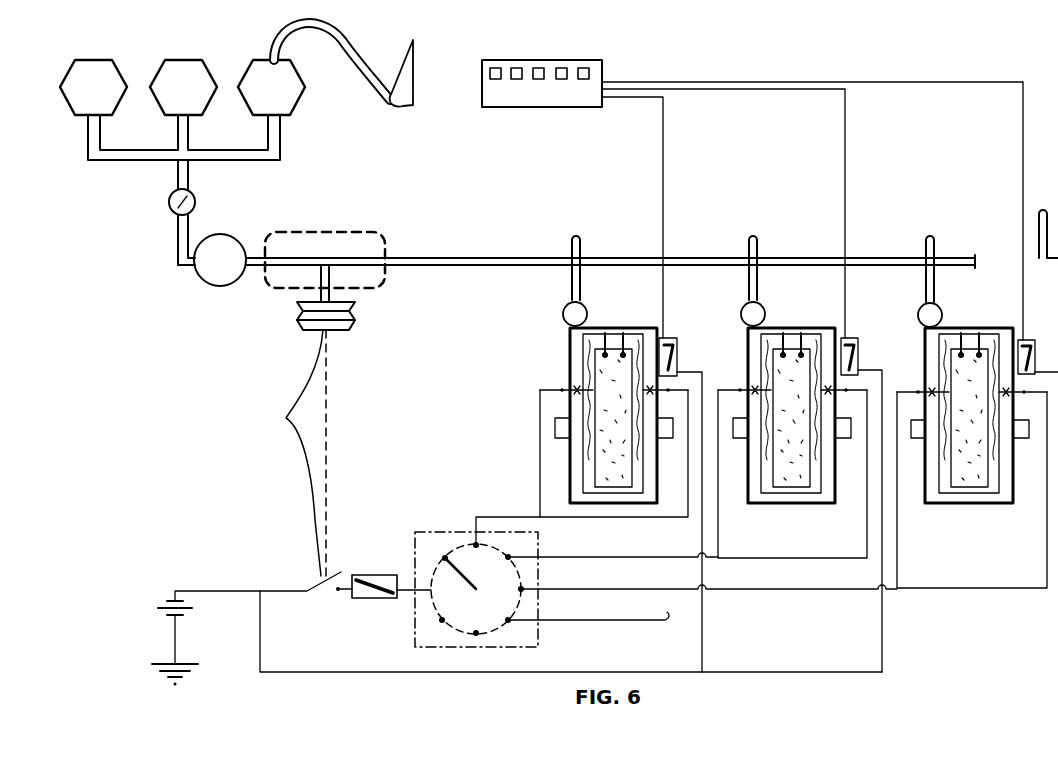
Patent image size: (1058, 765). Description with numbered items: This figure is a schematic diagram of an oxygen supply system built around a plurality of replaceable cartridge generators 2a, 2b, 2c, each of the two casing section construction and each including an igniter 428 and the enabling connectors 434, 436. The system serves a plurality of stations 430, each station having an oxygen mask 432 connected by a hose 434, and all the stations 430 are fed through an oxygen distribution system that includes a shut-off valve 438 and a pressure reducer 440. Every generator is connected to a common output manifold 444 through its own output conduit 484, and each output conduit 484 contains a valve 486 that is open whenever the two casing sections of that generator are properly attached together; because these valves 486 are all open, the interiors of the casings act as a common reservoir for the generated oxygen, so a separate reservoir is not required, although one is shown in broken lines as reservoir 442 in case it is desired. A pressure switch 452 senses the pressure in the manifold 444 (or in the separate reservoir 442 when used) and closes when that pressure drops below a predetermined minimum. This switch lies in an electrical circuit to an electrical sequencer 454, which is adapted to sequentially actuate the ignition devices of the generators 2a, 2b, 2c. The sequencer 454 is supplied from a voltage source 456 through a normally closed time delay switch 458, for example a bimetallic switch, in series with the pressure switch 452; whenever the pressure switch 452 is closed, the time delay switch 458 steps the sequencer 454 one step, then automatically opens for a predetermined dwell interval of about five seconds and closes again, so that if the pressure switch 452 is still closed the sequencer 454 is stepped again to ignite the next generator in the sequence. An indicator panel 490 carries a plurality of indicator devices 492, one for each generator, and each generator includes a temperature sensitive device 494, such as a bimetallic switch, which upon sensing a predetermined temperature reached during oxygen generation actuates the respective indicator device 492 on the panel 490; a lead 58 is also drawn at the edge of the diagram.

The station 430 is at (272, 62).
The oxygen mask 432 is at (413, 56).
The hose 434 is at (355, 72).
The enabling connector 436 is at (572, 390).
The shut-off valve 438 is at (186, 200).
The pressure reducer 440 is at (215, 262).
The separate reservoir 442 is at (335, 232).
The common output manifold 444 is at (451, 258).
The pressure switch 452 is at (293, 440).
The electrical sequencer 454 is at (462, 524).
The voltage source 456 is at (152, 610).
The time delay switch 458 is at (386, 598).
The output conduit 484 is at (581, 246).
The valve 486 is at (586, 310).
The igniter 428 is at (604, 352).
The indicator panel 490 is at (574, 62).
The indicator device 492 is at (495, 68).
The temperature sensitive device 494 is at (678, 356).
The lead 58 is at (1051, 338).
The generator 2a is at (628, 504).
The generator 2b is at (807, 504).
The generator 2c is at (995, 506).